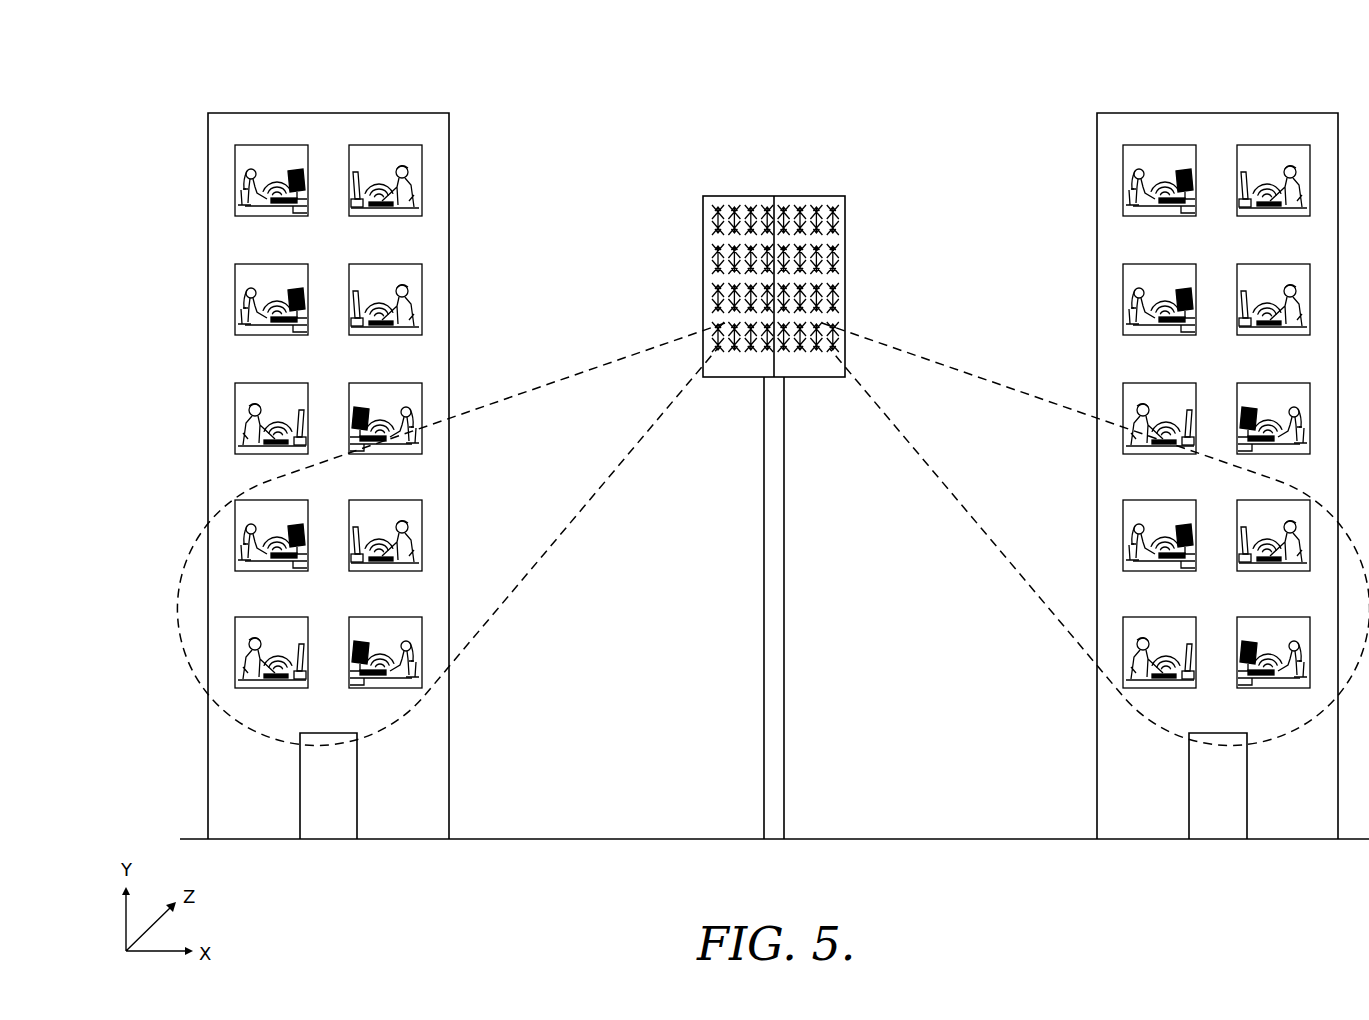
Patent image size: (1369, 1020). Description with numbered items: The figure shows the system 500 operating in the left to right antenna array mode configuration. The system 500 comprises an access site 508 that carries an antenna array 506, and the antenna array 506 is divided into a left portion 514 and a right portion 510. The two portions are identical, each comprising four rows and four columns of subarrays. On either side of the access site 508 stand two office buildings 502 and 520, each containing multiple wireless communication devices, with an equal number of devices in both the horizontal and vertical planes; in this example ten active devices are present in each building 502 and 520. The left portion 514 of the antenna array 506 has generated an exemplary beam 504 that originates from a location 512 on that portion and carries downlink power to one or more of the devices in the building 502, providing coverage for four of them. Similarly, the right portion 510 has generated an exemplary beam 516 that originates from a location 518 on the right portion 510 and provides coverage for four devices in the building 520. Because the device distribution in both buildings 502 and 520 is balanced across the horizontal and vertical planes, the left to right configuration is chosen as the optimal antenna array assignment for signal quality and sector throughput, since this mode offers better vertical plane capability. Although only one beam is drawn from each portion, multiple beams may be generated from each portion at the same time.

The system 500 is at (138, 92).
The office building 502 is at (450, 730).
The beam 504 is at (561, 536).
The antenna array 506 is at (774, 284).
The access site 508 is at (785, 441).
The right portion 510 is at (840, 254).
The location 512 is at (736, 317).
The left portion 514 is at (710, 254).
The beam 516 is at (987, 536).
The location 518 is at (814, 317).
The office building 520 is at (1097, 736).